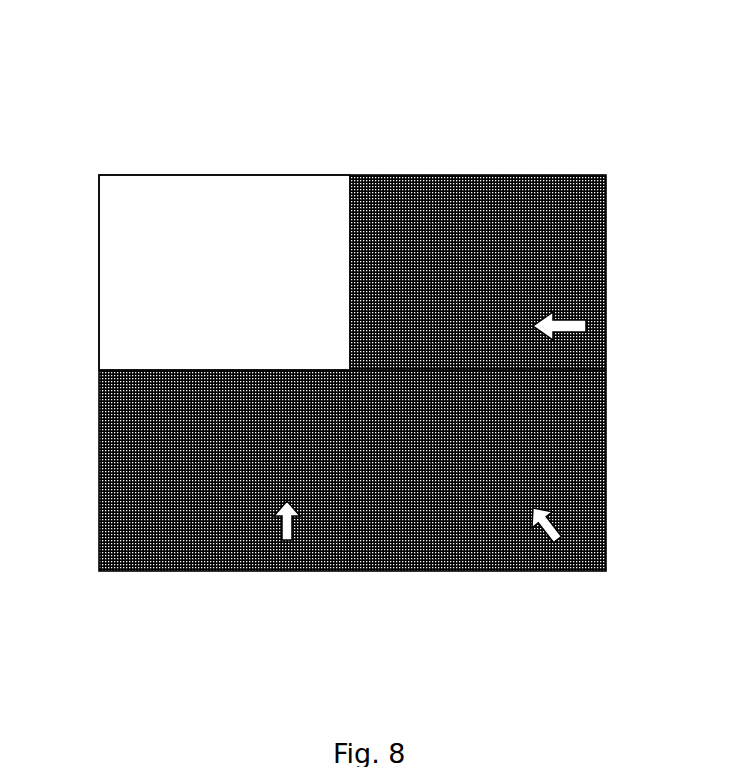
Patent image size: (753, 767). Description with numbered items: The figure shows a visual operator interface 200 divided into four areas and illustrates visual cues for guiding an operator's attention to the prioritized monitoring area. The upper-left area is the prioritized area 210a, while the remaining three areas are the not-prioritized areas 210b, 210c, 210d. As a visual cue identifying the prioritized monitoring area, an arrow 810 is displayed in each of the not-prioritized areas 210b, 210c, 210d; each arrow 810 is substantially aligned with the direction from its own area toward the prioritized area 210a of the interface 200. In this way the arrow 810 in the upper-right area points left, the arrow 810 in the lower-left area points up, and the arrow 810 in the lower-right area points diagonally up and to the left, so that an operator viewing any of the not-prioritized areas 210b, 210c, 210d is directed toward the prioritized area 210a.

The interface 200 is at (72, 126).
The prioritized area 210a is at (168, 204).
The not-prioritized area 210b is at (419, 204).
The not-prioritized area 210c is at (168, 404).
The not-prioritized area 210d is at (420, 404).
The arrow 810 is at (283, 533).